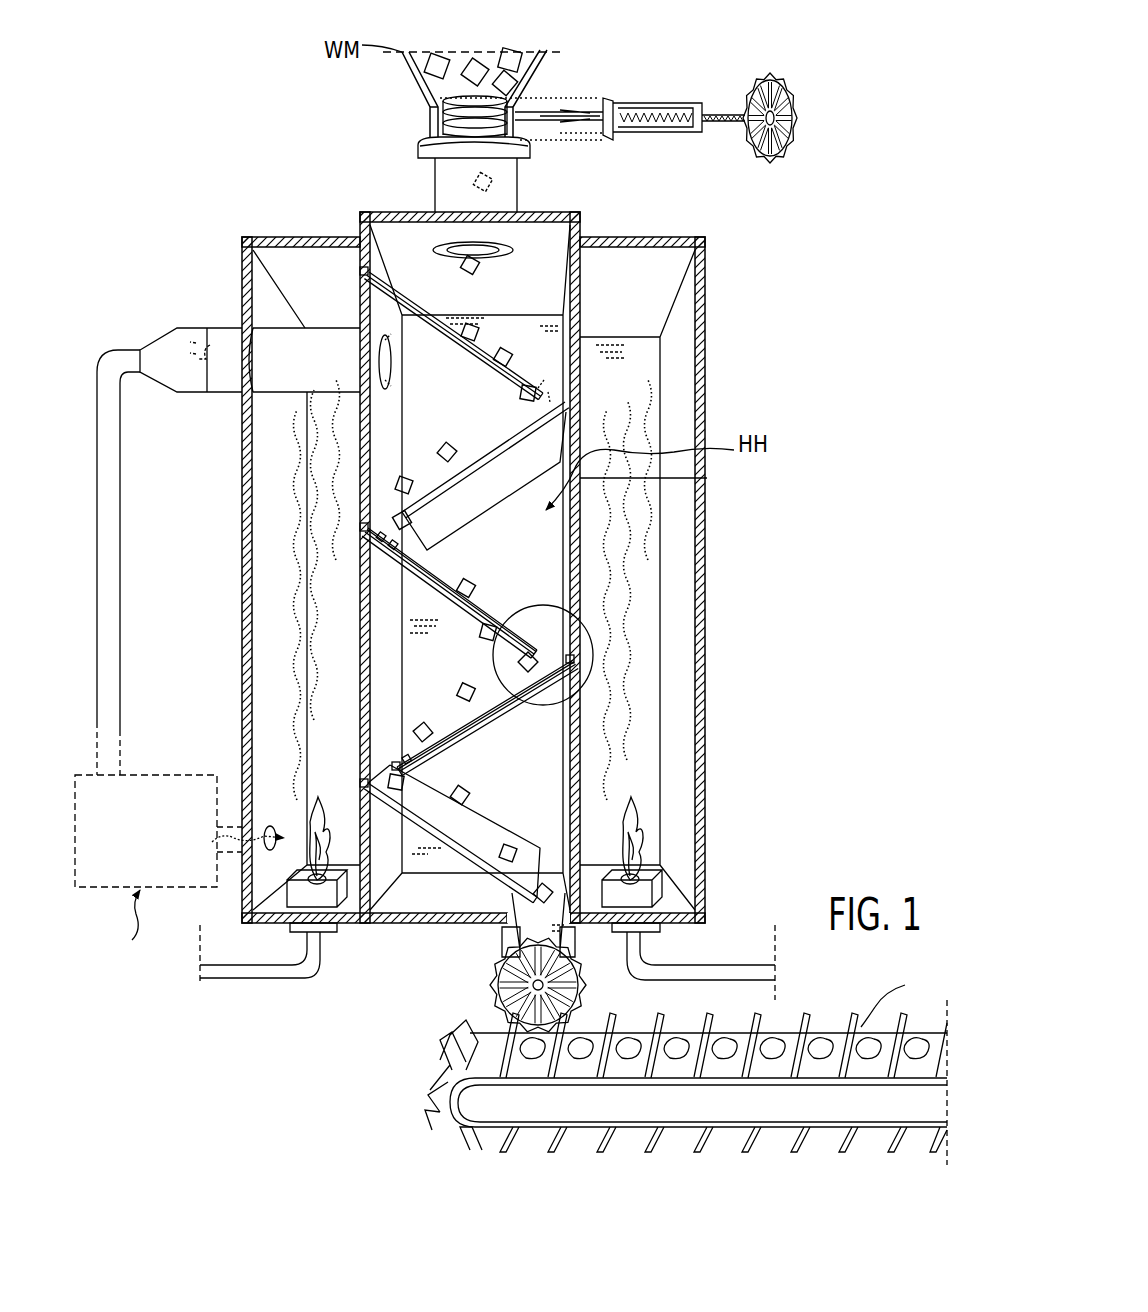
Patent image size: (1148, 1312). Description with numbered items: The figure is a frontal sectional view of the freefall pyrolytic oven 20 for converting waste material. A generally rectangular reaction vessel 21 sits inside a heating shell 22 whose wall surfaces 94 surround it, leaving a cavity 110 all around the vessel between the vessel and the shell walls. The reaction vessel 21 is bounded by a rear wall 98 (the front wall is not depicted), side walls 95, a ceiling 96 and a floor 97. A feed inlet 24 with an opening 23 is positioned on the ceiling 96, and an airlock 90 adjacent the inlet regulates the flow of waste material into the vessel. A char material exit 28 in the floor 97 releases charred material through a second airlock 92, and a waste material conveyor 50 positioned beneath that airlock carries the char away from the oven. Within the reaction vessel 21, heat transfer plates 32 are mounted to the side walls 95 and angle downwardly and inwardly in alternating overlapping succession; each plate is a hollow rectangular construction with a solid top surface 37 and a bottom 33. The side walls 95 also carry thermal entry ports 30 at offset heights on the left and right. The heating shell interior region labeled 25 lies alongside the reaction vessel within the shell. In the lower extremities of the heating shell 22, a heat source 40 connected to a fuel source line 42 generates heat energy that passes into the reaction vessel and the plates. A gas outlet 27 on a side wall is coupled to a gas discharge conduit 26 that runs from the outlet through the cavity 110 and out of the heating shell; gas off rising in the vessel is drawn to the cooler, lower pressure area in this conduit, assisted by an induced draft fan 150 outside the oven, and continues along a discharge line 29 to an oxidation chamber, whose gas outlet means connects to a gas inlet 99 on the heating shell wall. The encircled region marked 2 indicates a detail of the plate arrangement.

The detail section circle 2 is at (597, 640).
The freefall pyrolytic oven 20 is at (294, 166).
The reaction vessel 21 is at (580, 280).
The heating shell 22 is at (705, 260).
The opening 23 is at (450, 245).
The feed inlet 24 is at (528, 150).
The heating chamber interior 25 is at (580, 326).
The gas discharge conduit 26 is at (234, 328).
The gas outlet 27 is at (373, 396).
The char material exit 28 is at (506, 933).
The discharge line 29 is at (103, 540).
The thermal entry ports 30 is at (570, 403).
The heat transfer plates 32 is at (422, 586).
The bottom 33 is at (488, 496).
The top surface 37 is at (487, 827).
The heat source 40 is at (662, 880).
The fuel source line 42 is at (248, 992).
The waste material conveyor 50 is at (664, 1064).
The airlock 90 is at (626, 92).
The airlock 92 is at (486, 979).
The wall surfaces 94 is at (704, 512).
The side walls 95 is at (566, 576).
The ceiling 96 is at (560, 212).
The floor 97 is at (372, 922).
The rear wall 98 is at (707, 470).
The gas inlet 99 is at (268, 827).
The cavity 110 is at (656, 620).
The induced draft fan 150 is at (92, 604).